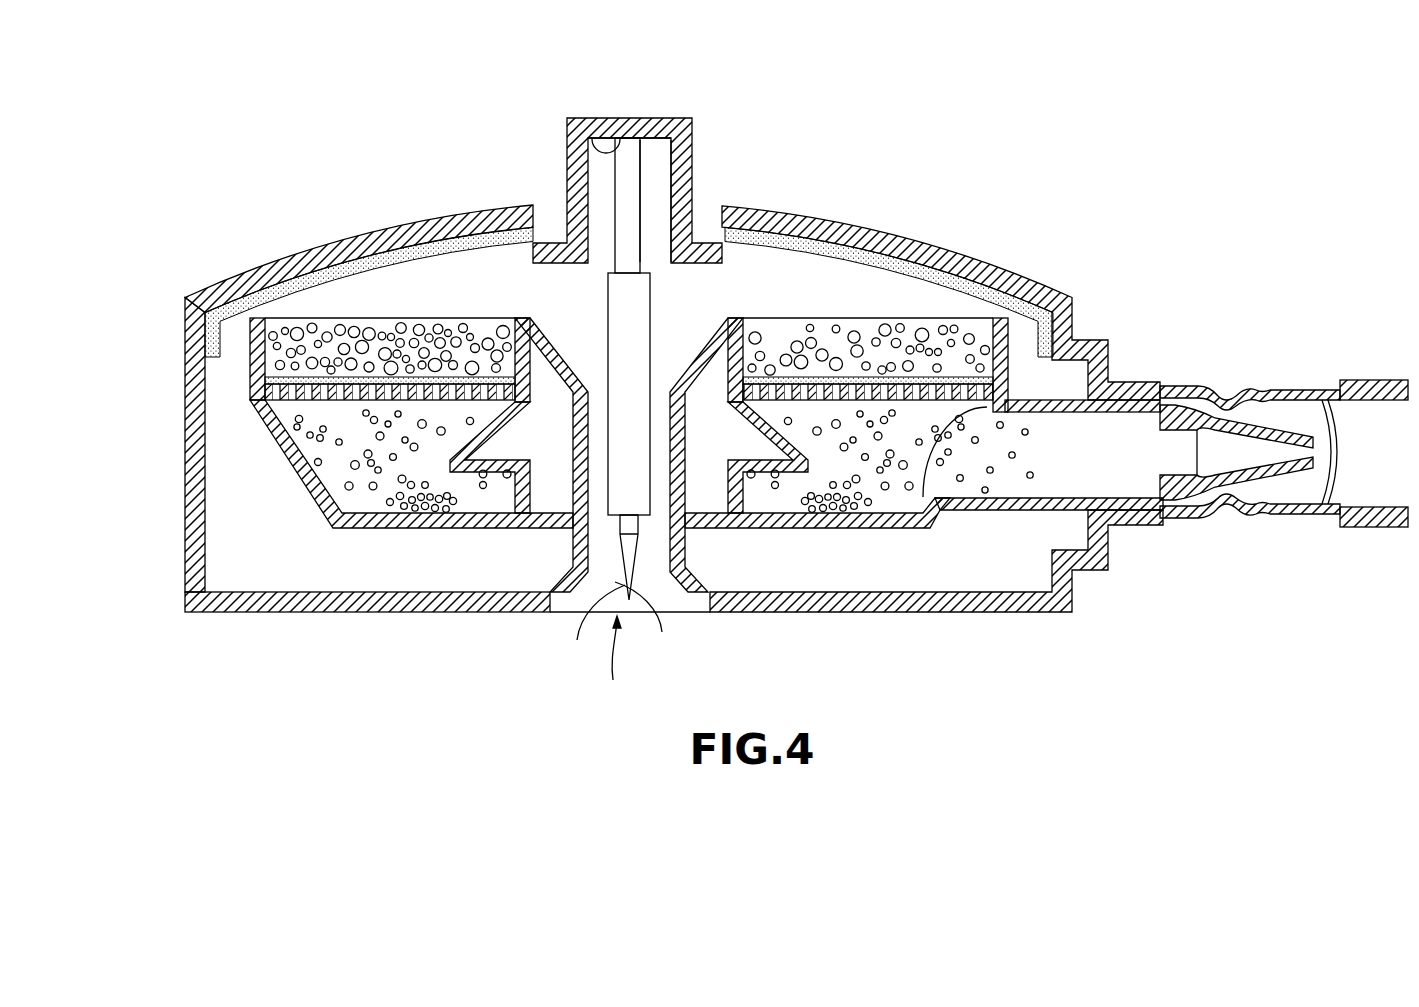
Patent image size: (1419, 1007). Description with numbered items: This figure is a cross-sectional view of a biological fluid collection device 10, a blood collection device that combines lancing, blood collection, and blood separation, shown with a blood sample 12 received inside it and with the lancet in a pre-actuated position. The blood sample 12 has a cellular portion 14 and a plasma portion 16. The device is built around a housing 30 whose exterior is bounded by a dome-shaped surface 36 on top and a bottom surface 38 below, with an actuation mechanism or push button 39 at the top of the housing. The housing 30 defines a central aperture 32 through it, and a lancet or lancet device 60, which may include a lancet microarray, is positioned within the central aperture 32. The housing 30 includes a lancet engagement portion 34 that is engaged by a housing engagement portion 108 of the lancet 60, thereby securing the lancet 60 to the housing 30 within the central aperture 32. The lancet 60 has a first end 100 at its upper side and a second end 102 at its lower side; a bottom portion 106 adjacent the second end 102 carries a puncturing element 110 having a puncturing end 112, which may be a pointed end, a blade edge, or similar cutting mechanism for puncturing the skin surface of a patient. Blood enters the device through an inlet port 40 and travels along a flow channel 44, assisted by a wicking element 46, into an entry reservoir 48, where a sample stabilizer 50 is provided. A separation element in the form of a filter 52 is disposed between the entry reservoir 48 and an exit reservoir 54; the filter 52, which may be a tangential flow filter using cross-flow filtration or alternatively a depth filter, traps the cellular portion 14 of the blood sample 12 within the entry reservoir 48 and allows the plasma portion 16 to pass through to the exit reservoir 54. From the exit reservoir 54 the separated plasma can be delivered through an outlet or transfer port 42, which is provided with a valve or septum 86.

The biological fluid collection device 10 is at (1055, 205).
The blood sample 12 is at (374, 332).
The cellular portion 14 is at (884, 334).
The plasma portion 16 is at (407, 512).
The housing 30 is at (190, 522).
The central aperture 32 is at (578, 593).
The lancet engagement portion 34 is at (622, 138).
The dome-shaped surface 36 is at (272, 262).
The bottom surface 38 is at (296, 611).
The push button 39 is at (576, 118).
The inlet port 40 is at (682, 608).
The transfer port 42 is at (1368, 382).
The flow channel 44 is at (474, 290).
The wicking element 46 is at (576, 540).
The entry reservoir 48 is at (428, 330).
The sample stabilizer 50 is at (265, 378).
The filter 52 is at (316, 398).
The exit reservoir 54 is at (1137, 465).
The lancet 60 is at (650, 303).
The septum 86 is at (1240, 368).
The first end 100 is at (640, 168).
The bottom portion 106 is at (630, 512).
The housing engagement portion 108 is at (643, 192).
The puncturing element 110 is at (585, 630).
The puncturing end 112 is at (653, 624).
The second end 102 is at (620, 666).